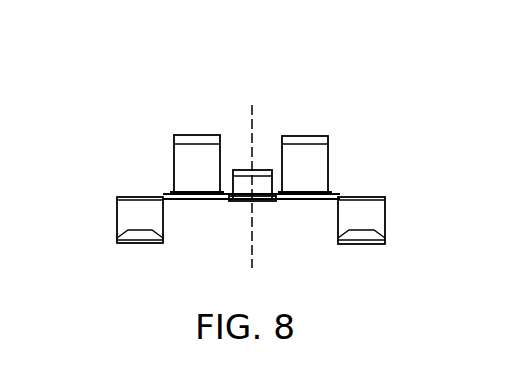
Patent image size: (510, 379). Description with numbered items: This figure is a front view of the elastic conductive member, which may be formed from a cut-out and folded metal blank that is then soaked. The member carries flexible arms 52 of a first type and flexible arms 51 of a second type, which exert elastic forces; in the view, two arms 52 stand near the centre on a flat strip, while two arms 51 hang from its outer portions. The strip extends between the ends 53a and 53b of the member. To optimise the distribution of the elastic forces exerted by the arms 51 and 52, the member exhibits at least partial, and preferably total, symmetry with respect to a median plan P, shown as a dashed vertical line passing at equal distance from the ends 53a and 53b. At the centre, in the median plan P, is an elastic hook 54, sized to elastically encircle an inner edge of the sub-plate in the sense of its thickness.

The median plan P is at (254, 118).
The flexible arm of a second type 51 is at (140, 243).
The flexible arm of a first type 52 is at (188, 136).
The end of the conductive member 53a is at (382, 196).
The end of the conductive member 53b is at (117, 196).
The elastic hook 54 is at (258, 170).